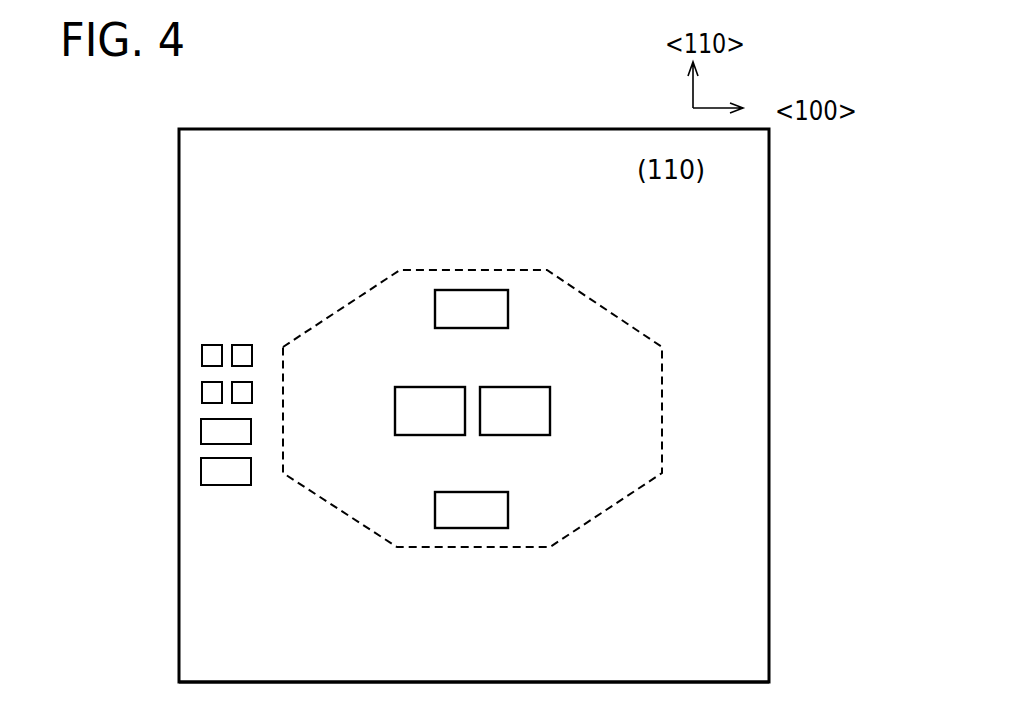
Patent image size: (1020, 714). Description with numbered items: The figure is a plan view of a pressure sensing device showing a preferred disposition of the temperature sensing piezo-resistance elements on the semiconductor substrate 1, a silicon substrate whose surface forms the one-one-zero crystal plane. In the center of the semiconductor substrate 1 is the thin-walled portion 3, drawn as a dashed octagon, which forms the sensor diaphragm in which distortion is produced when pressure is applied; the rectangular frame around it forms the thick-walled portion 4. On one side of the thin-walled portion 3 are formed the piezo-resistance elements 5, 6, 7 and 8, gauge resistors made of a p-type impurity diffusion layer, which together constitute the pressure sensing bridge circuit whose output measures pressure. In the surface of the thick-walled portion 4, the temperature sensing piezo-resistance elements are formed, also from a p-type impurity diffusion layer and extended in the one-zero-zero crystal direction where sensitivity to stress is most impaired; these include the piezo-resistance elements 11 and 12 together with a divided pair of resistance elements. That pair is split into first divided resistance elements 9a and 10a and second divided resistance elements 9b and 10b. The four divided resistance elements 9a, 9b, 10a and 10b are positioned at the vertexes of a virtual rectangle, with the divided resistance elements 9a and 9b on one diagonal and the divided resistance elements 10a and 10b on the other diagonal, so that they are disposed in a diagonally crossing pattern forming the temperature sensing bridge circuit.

The semiconductor substrate 1 is at (742, 621).
The thin-walled portion 3 is at (583, 500).
The thick-walled portion 4 is at (668, 668).
The piezo-resistance element 5 is at (508, 309).
The piezo-resistance element 6 is at (550, 398).
The piezo-resistance element 7 is at (508, 510).
The piezo-resistance element 8 is at (430, 387).
The first divided resistance element 9a is at (240, 394).
The second divided resistance element 9b is at (212, 355).
The first divided resistance element 10a is at (210, 392).
The second divided resistance element 10b is at (240, 355).
The piezo-resistance element for temperature sensing 11 is at (210, 432).
The piezo-resistance element for temperature sensing 12 is at (210, 472).